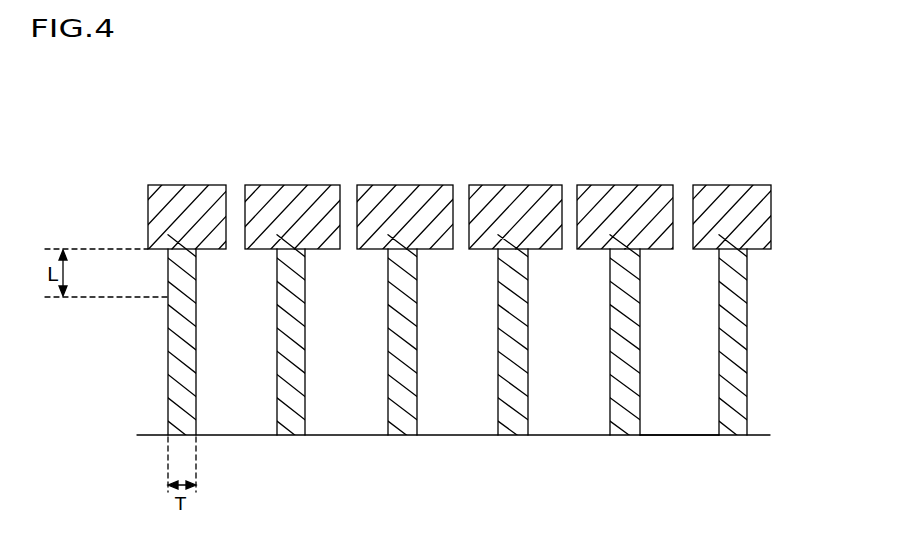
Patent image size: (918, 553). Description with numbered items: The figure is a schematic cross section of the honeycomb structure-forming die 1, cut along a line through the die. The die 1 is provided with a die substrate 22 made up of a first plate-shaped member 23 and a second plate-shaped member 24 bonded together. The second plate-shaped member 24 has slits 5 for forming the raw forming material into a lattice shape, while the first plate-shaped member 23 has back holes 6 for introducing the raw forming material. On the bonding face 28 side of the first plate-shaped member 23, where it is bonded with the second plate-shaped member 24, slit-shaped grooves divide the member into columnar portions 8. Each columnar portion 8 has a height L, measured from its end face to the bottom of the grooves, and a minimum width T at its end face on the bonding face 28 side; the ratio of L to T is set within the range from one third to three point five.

The honeycomb structure-forming die 1 is at (702, 127).
The slits 5 is at (682, 188).
The back holes 6 is at (703, 381).
The columnar portions 8 is at (180, 277).
The die substrate 22 is at (756, 314).
The first plate-shaped member 23 is at (772, 342).
The second plate-shaped member 24 is at (762, 219).
The bonding face 28 is at (160, 239).